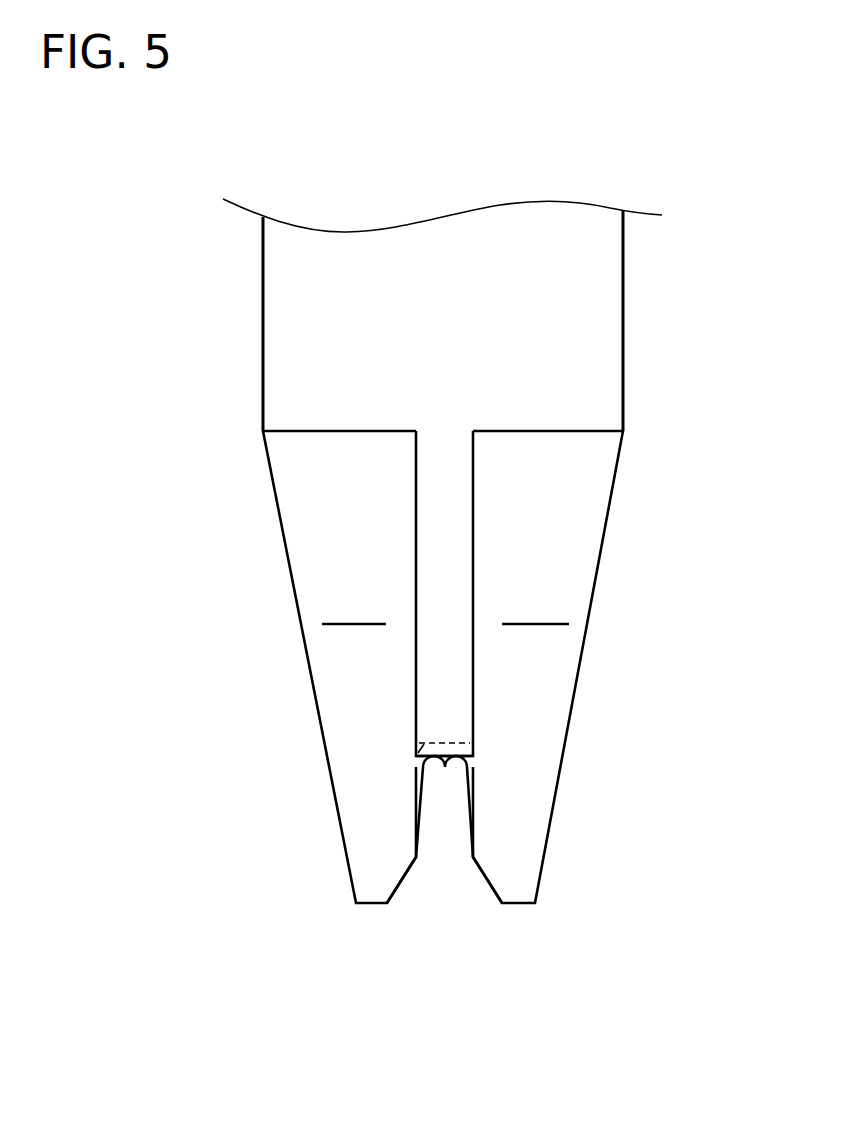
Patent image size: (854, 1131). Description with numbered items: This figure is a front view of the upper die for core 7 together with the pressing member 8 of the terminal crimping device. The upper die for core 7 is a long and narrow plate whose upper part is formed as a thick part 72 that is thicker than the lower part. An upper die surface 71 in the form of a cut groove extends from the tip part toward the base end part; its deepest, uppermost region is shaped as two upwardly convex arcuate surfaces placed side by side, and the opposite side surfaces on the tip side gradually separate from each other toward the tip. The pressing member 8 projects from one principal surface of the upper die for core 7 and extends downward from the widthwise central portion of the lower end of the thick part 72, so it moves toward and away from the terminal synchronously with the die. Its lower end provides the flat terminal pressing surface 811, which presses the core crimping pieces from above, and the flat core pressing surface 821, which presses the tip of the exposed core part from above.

The upper die for core 7 is at (613, 496).
The thick part 72 is at (612, 354).
The pressing member 8 is at (474, 602).
The core pressing surface 821 is at (474, 760).
The terminal pressing surface 811 is at (416, 760).
The upper die surface 71 is at (470, 835).